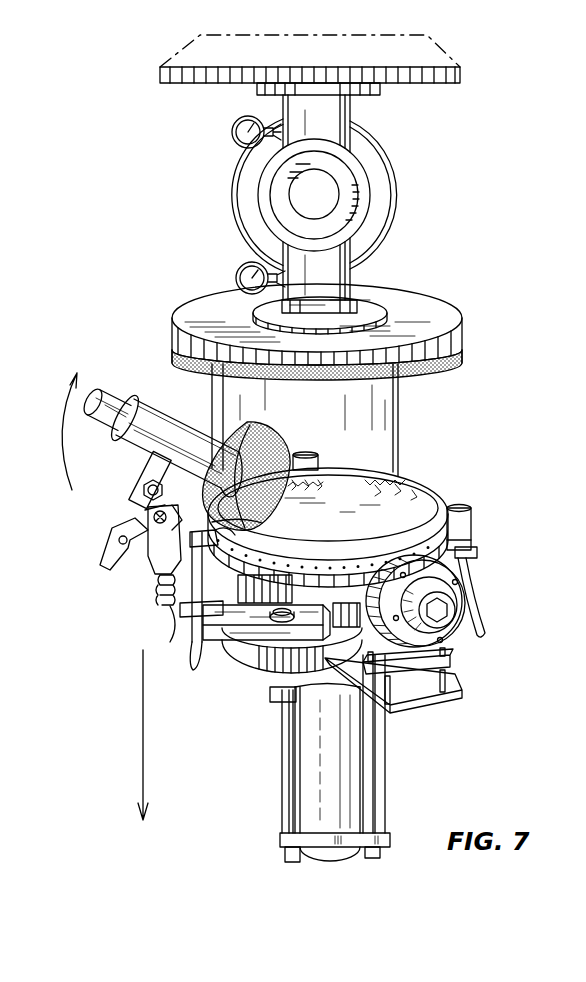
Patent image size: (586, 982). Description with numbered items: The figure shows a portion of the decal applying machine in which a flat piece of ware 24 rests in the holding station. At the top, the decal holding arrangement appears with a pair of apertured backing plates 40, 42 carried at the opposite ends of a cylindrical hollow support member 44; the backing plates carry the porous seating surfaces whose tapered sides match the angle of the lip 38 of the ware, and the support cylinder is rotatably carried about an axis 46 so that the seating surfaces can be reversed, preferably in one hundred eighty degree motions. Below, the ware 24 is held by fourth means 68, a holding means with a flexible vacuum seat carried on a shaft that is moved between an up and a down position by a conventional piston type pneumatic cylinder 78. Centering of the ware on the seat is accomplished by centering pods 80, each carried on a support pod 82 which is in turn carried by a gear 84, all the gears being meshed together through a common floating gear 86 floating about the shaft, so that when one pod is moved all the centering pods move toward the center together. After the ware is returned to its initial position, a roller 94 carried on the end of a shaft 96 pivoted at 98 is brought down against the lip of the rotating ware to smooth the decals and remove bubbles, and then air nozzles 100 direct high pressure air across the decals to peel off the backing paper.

The piece of ware 24 is at (410, 483).
The lip 38 is at (420, 546).
The apertured backing plate 40 is at (160, 75).
The apertured backing plate 42 is at (463, 327).
The cylindrical hollow support member 44 is at (350, 115).
The axis 46 is at (326, 209).
The fourth means 68 is at (249, 631).
The pneumatic cylinder 78 is at (357, 741).
The centering pod 80 is at (306, 455).
The support pod 82 is at (260, 640).
The gear 84 is at (278, 668).
The floating gear 86 is at (348, 660).
The roller 94 is at (258, 450).
The shaft 96 is at (173, 430).
The pivot 98 is at (140, 492).
The air nozzle 100 is at (252, 528).